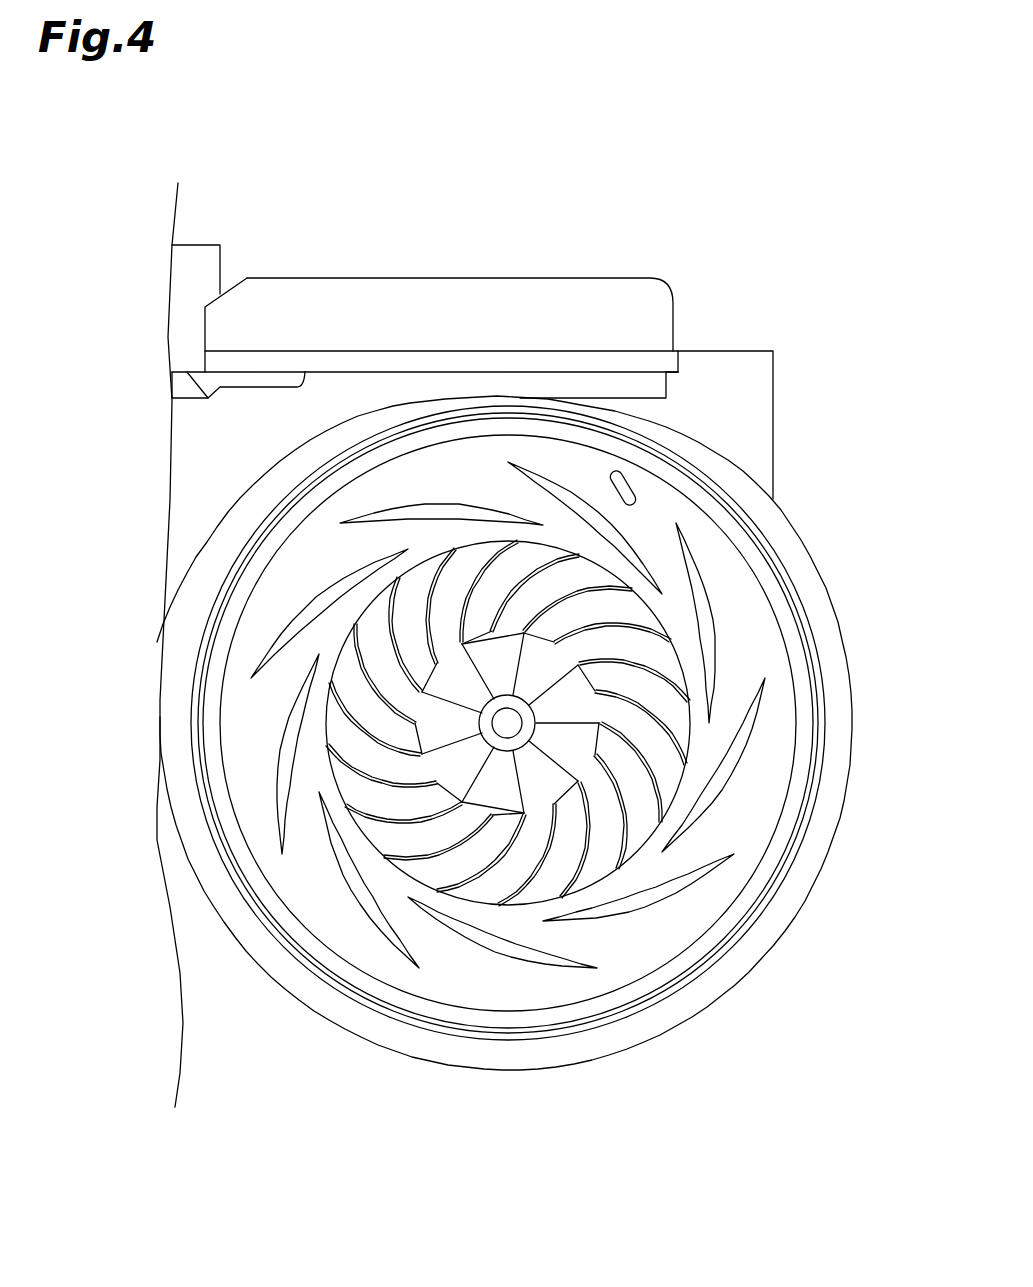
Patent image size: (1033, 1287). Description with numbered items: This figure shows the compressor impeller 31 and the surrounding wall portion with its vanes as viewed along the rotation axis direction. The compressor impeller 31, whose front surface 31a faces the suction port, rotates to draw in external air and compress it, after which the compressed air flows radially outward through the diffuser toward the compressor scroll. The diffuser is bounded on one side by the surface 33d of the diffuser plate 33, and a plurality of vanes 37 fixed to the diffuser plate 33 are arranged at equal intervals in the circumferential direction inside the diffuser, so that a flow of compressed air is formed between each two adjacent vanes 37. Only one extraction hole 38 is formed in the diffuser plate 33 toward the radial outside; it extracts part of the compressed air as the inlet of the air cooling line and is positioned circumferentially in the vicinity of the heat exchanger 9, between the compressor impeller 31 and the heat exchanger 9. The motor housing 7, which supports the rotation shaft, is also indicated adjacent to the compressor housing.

The motor housing 7 is at (778, 397).
The heat exchanger 9 is at (443, 278).
The compressor impeller 31 is at (368, 860).
The front surface 31a is at (690, 732).
The diffuser plate 33 is at (210, 700).
The surface of the diffuser plate 33d is at (677, 925).
The vanes 37 is at (567, 490).
The extraction hole 38 is at (636, 490).